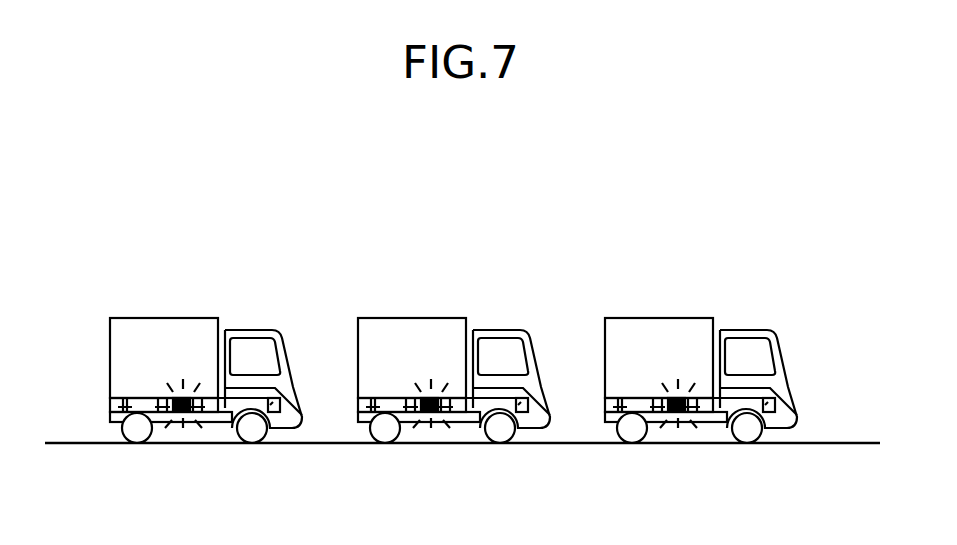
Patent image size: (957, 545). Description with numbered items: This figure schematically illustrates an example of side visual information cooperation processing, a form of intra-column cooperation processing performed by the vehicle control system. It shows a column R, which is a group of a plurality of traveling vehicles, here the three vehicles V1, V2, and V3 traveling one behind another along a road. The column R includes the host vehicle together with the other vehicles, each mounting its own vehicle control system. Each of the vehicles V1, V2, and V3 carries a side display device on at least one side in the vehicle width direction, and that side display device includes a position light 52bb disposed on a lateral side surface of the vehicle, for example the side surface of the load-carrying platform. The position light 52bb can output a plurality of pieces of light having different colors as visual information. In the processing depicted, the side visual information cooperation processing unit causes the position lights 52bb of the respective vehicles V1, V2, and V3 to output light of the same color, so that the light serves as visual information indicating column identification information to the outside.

The vehicle V1 is at (701, 346).
The vehicle V2 is at (454, 346).
The vehicle V3 is at (206, 346).
The position light 52bb is at (442, 437).
The column R is at (316, 208).